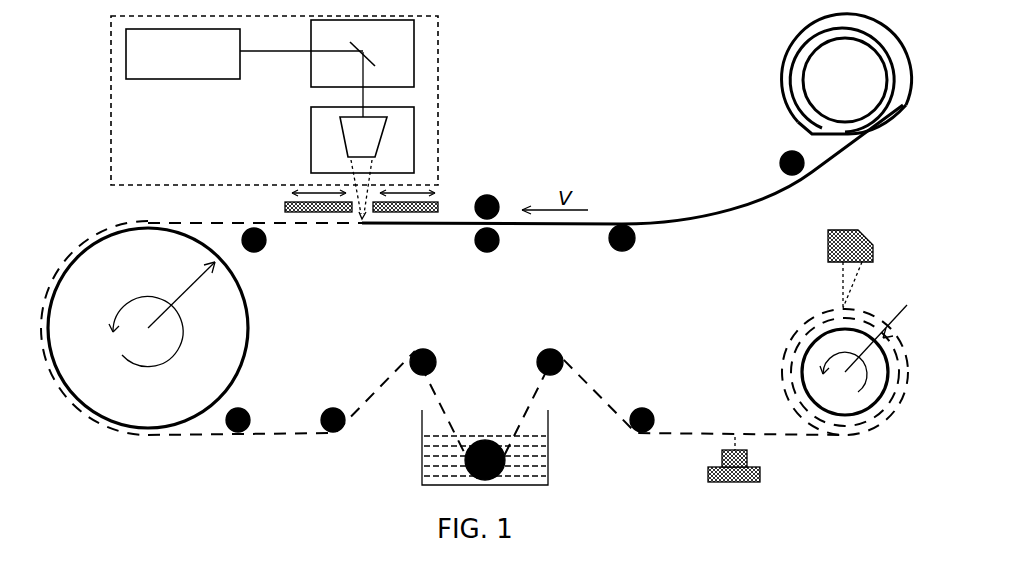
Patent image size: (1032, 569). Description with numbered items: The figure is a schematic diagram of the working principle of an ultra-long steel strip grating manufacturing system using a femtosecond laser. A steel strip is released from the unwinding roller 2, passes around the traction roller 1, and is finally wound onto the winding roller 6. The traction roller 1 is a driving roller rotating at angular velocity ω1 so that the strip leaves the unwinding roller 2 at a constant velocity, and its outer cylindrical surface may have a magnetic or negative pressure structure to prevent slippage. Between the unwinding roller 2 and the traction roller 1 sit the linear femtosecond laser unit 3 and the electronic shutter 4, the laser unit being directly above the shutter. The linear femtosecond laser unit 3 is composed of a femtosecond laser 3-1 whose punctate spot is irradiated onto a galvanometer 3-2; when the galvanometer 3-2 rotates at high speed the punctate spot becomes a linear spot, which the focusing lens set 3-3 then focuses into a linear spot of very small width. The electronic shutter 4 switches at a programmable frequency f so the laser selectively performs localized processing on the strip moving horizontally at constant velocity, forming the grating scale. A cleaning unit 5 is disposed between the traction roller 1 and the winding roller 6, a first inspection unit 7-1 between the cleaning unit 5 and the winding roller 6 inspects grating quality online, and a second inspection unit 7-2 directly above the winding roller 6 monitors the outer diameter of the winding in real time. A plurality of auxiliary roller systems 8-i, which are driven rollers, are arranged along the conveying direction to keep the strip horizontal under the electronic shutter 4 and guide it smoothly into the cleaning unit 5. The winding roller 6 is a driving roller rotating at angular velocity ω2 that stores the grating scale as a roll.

The traction roller 1 is at (249, 330).
The unwinding roller 2 is at (802, 80).
The linear femtosecond laser unit 3 is at (111, 100).
The femtosecond laser 3-1 is at (126, 51).
The galvanometer 3-2 is at (414, 52).
The focusing lens set 3-3 is at (414, 136).
The electronic shutter 4 is at (285, 207).
The cleaning unit 5 is at (422, 468).
The winding roller 6 is at (790, 377).
The first inspection unit 7-1 is at (708, 468).
The second inspection unit 7-2 is at (828, 245).
The auxiliary roller systems 8-i is at (493, 250).